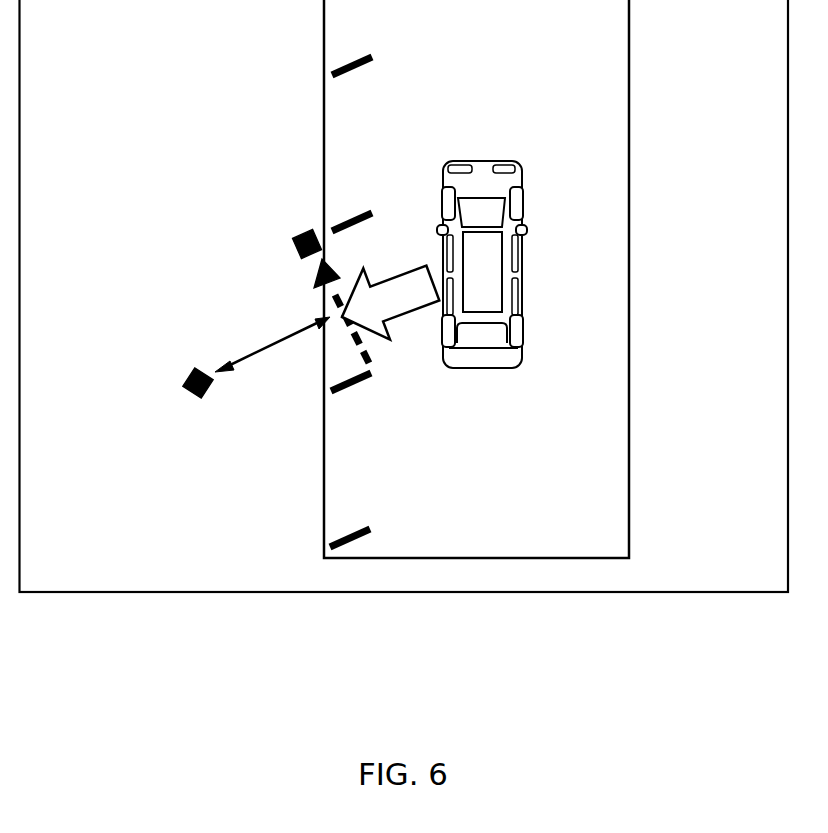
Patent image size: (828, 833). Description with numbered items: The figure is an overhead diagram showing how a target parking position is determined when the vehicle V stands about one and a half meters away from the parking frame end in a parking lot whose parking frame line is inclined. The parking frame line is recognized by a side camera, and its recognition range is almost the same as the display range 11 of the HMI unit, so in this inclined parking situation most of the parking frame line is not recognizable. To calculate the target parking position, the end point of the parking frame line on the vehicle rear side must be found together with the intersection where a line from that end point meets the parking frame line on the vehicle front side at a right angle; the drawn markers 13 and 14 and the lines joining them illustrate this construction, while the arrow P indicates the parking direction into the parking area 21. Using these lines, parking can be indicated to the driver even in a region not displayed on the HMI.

The display range 11 is at (363, 66).
The first marker 13 is at (306, 232).
The second marker 14 is at (194, 370).
The parking area 21 is at (629, 130).
The vehicle V is at (493, 288).
The parking direction arrow P is at (390, 303).